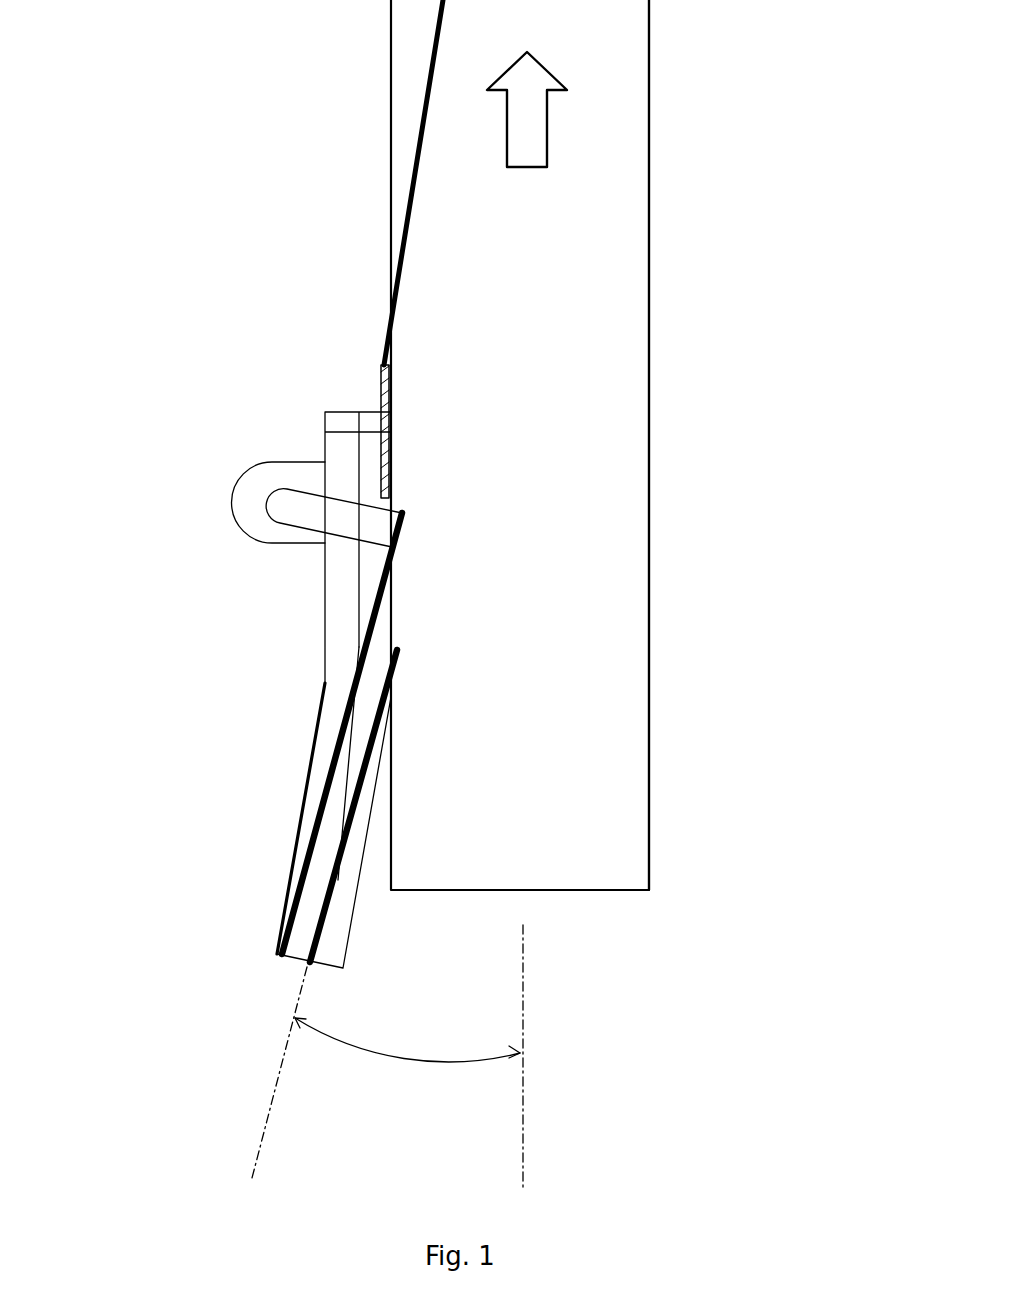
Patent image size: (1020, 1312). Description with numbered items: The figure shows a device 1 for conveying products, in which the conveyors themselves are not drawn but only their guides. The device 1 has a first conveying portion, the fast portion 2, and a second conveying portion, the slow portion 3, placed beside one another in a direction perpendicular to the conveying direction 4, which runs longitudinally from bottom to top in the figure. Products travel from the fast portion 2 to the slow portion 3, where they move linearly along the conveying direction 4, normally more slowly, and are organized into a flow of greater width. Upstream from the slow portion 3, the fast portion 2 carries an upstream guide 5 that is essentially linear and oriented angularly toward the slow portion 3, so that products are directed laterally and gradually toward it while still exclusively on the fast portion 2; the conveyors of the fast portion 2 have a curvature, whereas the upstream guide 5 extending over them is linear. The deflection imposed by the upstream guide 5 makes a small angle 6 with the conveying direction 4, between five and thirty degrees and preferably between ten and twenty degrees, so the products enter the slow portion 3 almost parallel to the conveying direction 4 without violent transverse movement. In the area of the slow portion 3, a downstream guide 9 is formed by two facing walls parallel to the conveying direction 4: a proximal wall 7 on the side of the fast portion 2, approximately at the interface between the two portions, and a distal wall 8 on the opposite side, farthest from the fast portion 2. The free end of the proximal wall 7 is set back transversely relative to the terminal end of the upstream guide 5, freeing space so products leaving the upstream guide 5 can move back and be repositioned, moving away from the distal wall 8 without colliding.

The device for conveying products 1 is at (239, 685).
The fast portion 2 is at (323, 870).
The slow portion 3 is at (580, 408).
The conveying direction 4 is at (533, 151).
The upstream guide 5 is at (321, 761).
The angle 6 is at (327, 1061).
The proximal wall 7 is at (375, 372).
The distal wall 8 is at (628, 473).
The downstream guide 9 is at (356, 445).